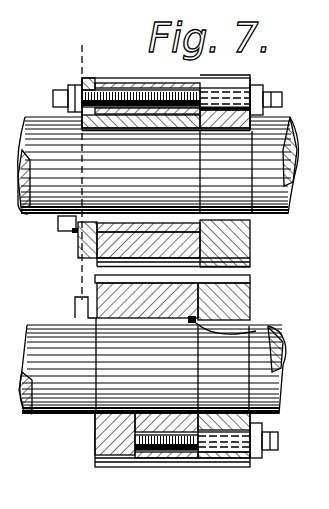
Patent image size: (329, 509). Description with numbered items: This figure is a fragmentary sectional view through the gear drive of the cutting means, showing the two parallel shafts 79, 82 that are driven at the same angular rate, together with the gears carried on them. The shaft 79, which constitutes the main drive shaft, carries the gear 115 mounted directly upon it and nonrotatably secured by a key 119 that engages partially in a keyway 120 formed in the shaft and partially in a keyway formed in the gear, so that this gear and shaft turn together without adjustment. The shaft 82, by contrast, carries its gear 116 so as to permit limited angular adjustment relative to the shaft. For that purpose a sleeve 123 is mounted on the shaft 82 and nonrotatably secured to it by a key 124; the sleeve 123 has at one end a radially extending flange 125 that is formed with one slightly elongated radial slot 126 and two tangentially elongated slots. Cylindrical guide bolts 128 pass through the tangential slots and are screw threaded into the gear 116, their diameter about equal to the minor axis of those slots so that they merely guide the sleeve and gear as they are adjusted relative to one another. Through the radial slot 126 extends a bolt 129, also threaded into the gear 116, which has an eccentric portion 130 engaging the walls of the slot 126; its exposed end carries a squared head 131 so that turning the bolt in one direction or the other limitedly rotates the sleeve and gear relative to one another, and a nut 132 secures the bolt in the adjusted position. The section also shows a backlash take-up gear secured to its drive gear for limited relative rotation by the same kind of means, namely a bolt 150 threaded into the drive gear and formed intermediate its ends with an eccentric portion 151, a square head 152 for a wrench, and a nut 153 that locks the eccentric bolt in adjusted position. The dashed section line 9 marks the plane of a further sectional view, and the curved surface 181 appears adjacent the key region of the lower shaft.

The section line 9- 9 is at (77, 69).
The shaft 79 is at (70, 388).
The shaft 82 is at (281, 126).
The gear 115 is at (110, 430).
The gear 116 is at (252, 248).
The key 119 is at (188, 312).
The keyway 120 is at (55, 326).
The sleeve 123 is at (96, 236).
The key 124 is at (252, 222).
The radially extending flange 125 is at (80, 250).
The slot 126 is at (89, 79).
The bolt 128 is at (52, 198).
The bolt 129 is at (125, 85).
The eccentric portion 130 is at (82, 117).
The head 131 is at (53, 97).
The nut 132 is at (74, 86).
The bolt 150 is at (178, 452).
The eccentric portion 151 is at (226, 450).
The head 152 is at (266, 451).
The nut 153 is at (261, 430).
The cam surface 181 is at (204, 330).